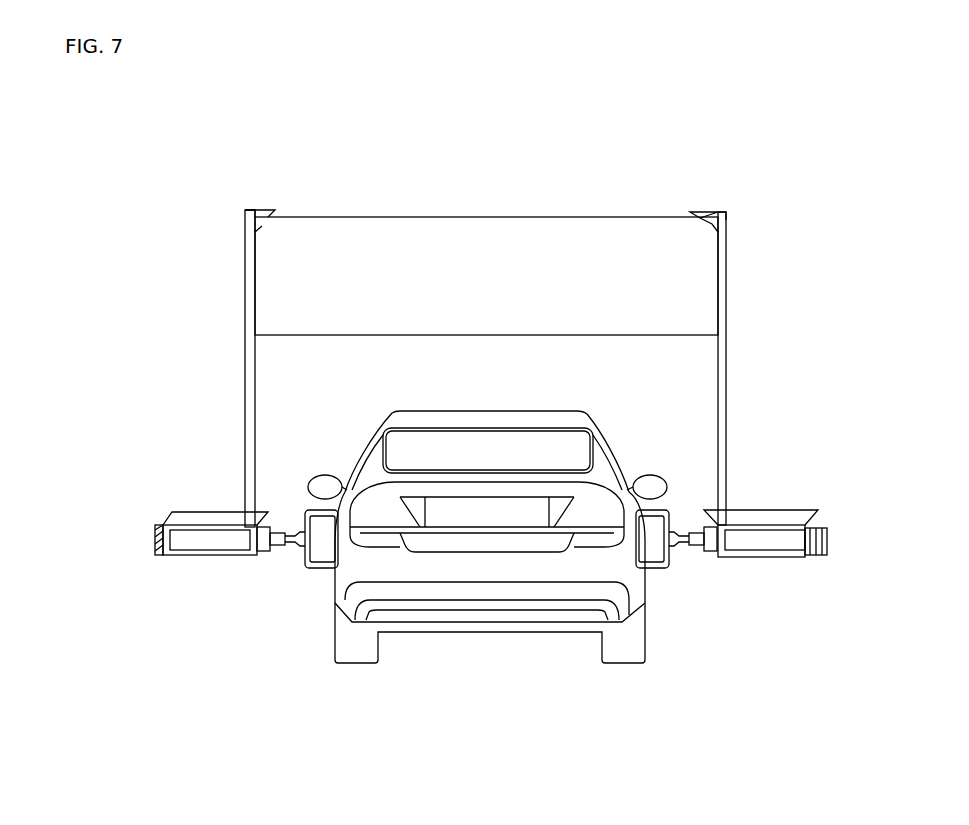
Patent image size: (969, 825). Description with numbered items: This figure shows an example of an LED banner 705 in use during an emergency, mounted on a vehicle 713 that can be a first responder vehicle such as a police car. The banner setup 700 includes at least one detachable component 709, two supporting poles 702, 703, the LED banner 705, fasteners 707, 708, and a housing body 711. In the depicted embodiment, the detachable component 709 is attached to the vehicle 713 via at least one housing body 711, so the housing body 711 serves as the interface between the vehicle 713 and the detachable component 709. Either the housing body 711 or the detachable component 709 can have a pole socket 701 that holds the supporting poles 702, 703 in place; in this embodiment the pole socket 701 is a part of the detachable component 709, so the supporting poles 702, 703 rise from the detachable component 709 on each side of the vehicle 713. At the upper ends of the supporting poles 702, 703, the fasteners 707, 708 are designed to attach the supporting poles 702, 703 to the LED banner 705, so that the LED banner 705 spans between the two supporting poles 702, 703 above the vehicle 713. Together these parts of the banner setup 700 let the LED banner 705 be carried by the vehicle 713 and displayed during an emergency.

The banner setup 700 is at (249, 170).
The pole socket 701 is at (247, 523).
The supporting pole 702 is at (232, 382).
The supporting pole 703 is at (733, 400).
The LED banner 705 is at (432, 208).
The fastener 707 is at (235, 218).
The fastener 708 is at (735, 225).
The detachable component 709 is at (196, 565).
The housing body 711 is at (673, 576).
The vehicle 713 is at (502, 408).